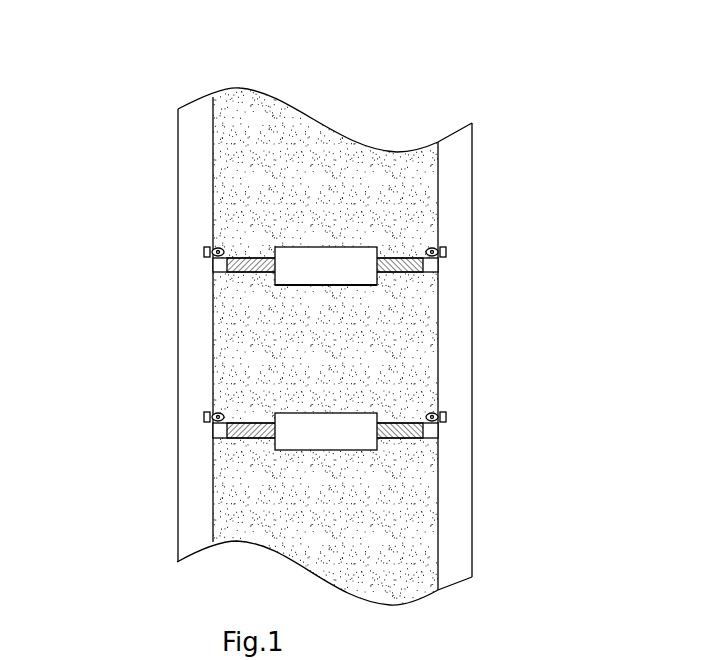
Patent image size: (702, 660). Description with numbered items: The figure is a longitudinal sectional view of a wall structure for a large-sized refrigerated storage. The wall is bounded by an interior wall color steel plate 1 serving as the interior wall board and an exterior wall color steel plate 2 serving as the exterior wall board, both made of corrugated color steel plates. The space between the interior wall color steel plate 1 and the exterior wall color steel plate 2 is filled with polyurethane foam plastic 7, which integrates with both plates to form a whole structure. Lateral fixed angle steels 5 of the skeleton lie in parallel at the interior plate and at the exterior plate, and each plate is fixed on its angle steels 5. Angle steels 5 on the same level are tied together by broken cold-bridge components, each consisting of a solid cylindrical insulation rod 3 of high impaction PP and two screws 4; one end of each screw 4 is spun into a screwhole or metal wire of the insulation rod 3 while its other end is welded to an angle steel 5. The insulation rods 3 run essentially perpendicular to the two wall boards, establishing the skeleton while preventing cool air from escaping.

The interior wall color steel plate 1 is at (197, 138).
The exterior wall color steel plate 2 is at (455, 482).
The insulation rod 3 is at (330, 258).
The screw 4 is at (413, 252).
The lateral fixed angle steel 5 is at (213, 268).
The polyurethane foam plastic 7 is at (392, 388).